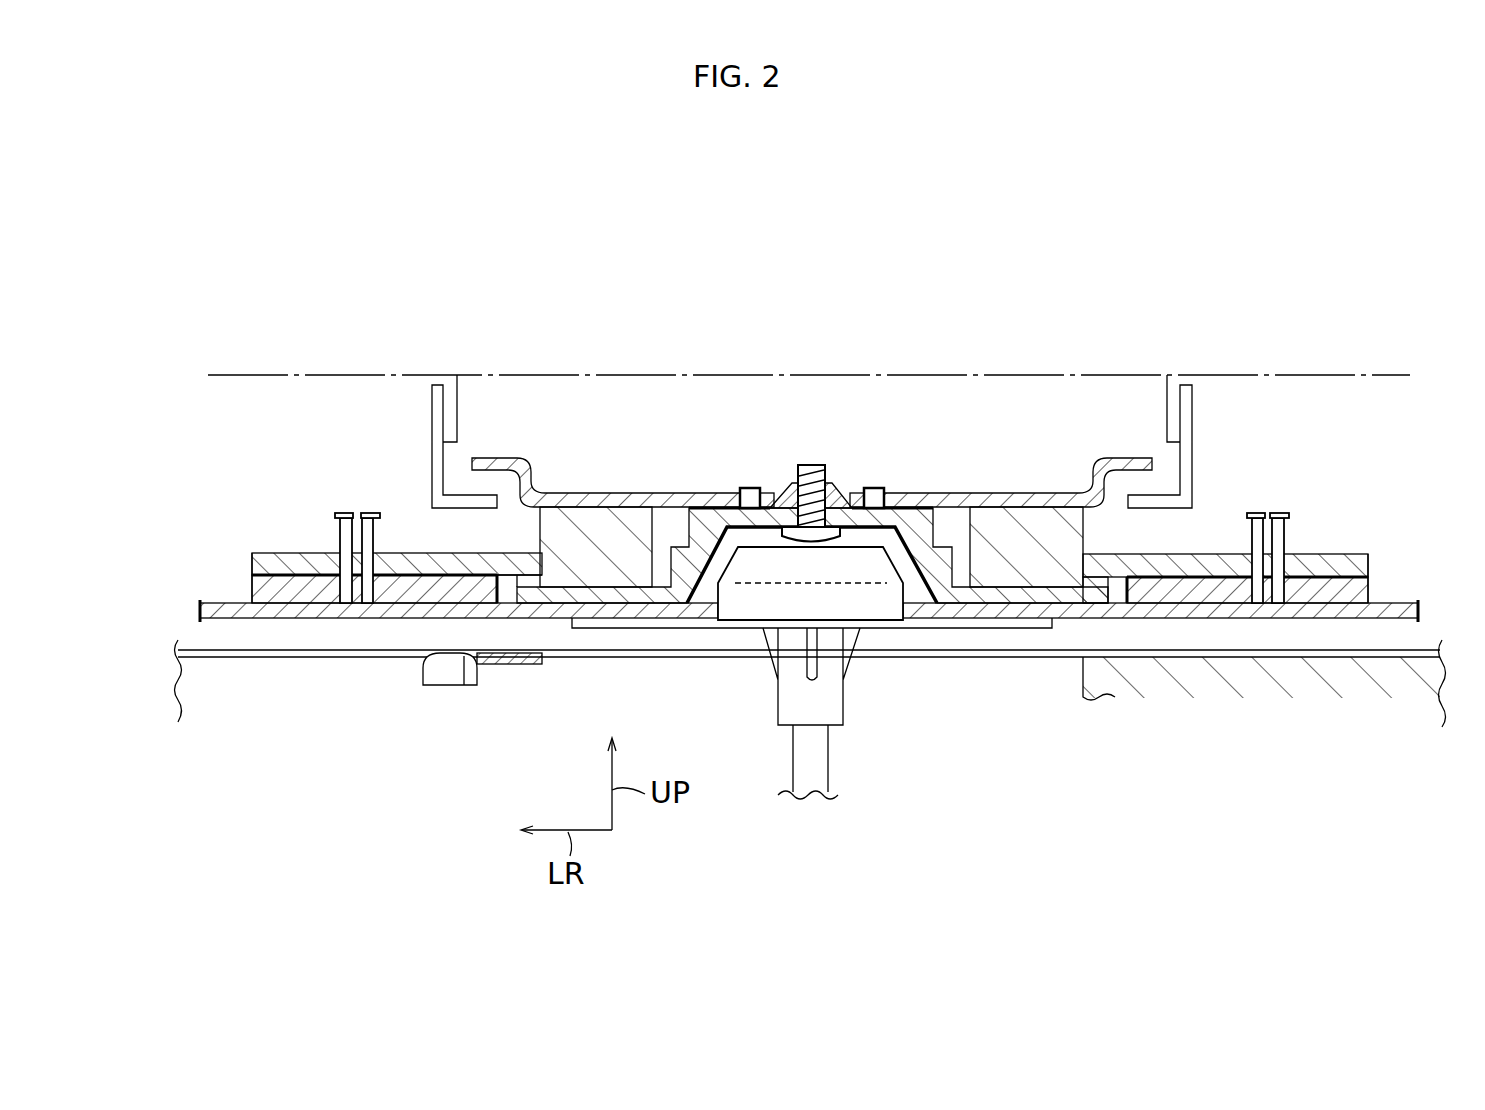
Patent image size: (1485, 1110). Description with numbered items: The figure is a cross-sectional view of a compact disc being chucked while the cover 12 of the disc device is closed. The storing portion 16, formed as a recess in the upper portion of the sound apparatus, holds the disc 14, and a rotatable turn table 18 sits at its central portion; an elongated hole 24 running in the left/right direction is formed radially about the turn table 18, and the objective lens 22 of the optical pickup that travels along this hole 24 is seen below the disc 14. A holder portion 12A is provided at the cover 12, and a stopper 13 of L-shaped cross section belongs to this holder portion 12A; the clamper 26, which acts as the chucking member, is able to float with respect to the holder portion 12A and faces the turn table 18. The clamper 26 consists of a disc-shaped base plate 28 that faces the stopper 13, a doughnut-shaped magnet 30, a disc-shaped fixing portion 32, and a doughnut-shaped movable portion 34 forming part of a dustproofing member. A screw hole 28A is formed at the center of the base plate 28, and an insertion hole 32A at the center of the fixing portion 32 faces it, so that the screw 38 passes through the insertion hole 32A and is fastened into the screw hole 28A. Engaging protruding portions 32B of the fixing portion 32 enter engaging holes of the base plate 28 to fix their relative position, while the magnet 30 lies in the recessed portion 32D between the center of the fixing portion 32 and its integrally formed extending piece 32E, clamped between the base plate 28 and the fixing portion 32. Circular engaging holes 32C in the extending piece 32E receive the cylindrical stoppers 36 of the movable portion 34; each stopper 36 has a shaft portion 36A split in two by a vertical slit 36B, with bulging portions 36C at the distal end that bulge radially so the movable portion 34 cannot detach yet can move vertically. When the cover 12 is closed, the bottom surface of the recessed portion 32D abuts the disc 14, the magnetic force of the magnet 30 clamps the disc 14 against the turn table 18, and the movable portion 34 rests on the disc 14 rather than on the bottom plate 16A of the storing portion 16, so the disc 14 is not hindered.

The cover 12 is at (1338, 380).
The holder portion 12A is at (1203, 444).
The stopper 13 is at (1192, 508).
The disc 14 is at (1412, 603).
The storing portion 16 is at (1393, 483).
The bottom plate 16A is at (1423, 654).
The turn table 18 is at (938, 627).
The objective lens 22 is at (427, 668).
The elongated hole 24 is at (276, 659).
The clamper 26 is at (630, 446).
The base plate 28 is at (492, 457).
The screw hole 28A is at (795, 482).
The magnet 30 is at (1085, 536).
The fixing portion 32 is at (1370, 552).
The insertion hole 32A is at (856, 482).
The engaging protruding portion 32B is at (742, 490).
The engaging hole 32C is at (346, 560).
The recessed portion 32D is at (527, 553).
The extending piece 32E is at (1372, 576).
The movable portion 34 is at (250, 573).
The stopper 36 is at (378, 535).
The shaft portion 36A is at (360, 598).
The slit 36B is at (357, 535).
The bulging portion 36C is at (369, 513).
The screw 38 is at (823, 466).